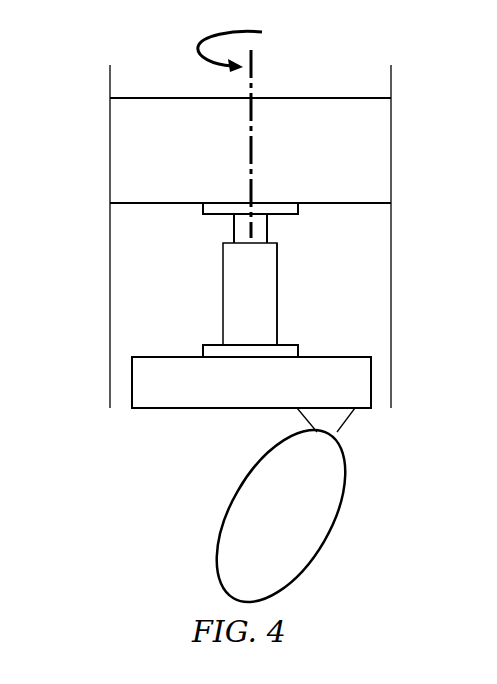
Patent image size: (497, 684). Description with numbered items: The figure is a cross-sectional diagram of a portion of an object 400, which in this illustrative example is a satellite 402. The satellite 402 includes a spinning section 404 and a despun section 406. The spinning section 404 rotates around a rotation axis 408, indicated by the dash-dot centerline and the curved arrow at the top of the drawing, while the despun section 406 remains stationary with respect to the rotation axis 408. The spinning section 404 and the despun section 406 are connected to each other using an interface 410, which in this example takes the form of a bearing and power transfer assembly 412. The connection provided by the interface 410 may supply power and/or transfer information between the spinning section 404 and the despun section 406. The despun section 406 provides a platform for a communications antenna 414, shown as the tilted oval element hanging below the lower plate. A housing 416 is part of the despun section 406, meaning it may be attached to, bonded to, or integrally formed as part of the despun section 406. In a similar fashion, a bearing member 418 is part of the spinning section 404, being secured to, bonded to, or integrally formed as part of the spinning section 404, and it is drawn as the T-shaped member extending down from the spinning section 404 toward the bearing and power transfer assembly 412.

The object 400 is at (157, 58).
The satellite 402 is at (110, 82).
The spinning section 404 is at (110, 150).
The despun section 406 is at (250, 409).
The rotation axis 408 is at (252, 171).
The interface 410 is at (223, 289).
The bearing and power transfer assembly 412 is at (278, 289).
The communications antenna 414 is at (233, 518).
The housing 416 is at (278, 317).
The bearing member 418 is at (268, 234).